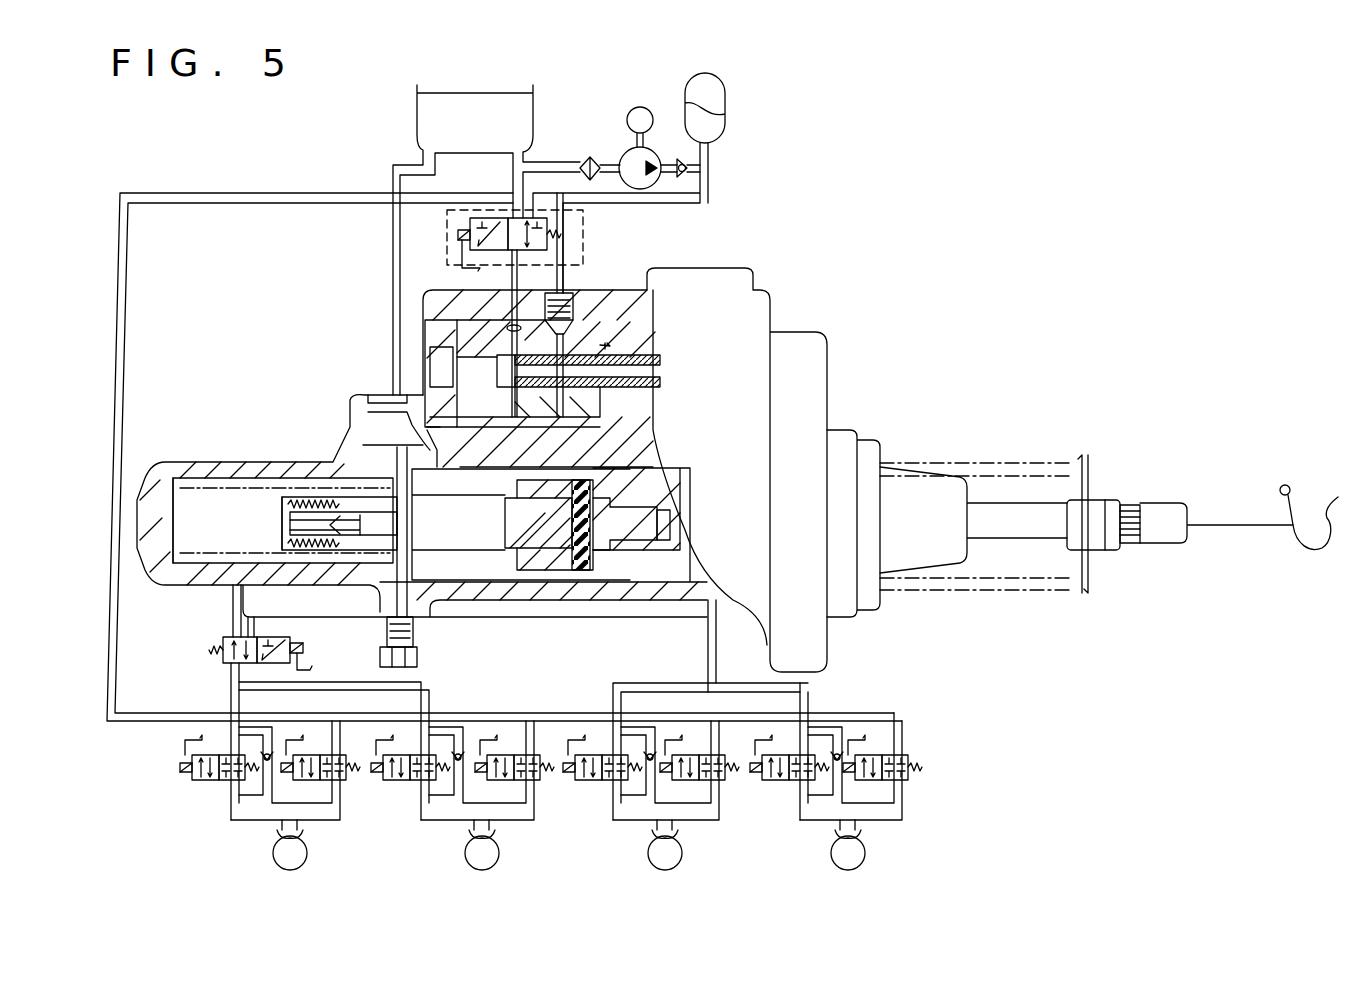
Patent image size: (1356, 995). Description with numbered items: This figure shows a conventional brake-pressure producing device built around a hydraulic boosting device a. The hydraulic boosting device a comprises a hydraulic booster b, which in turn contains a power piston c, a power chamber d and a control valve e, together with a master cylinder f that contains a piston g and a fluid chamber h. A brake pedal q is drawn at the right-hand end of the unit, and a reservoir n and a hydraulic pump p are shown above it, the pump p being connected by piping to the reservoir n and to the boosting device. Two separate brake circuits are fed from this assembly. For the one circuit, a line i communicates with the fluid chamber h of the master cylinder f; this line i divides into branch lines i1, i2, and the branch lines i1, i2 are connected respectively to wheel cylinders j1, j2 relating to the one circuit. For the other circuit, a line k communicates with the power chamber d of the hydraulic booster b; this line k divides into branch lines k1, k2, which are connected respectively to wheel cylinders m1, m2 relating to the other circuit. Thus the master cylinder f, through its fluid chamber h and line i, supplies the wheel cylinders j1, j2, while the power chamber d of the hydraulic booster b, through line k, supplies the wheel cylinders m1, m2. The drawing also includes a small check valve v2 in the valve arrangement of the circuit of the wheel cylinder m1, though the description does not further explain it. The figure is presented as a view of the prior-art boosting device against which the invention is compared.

The hydraulic boosting device a is at (796, 264).
The hydraulic booster b is at (608, 295).
The power piston c is at (617, 562).
The power chamber d is at (670, 428).
The control valve e is at (655, 300).
The master cylinder f is at (276, 466).
The piston g is at (332, 497).
The fluid chamber h is at (228, 510).
The line for the one circuit i is at (237, 608).
The branch line i1 is at (231, 700).
The branch line i2 is at (429, 705).
The wheel cylinder j1 is at (277, 834).
The wheel cylinder j2 is at (470, 834).
The line for the other circuit k is at (716, 645).
The branch line k1 is at (613, 703).
The branch line k2 is at (808, 705).
The wheel cylinder m1 is at (655, 834).
The wheel cylinder m2 is at (838, 836).
The reservoir n is at (527, 108).
The hydraulic pump p is at (631, 156).
The brake pedal q is at (1310, 510).
The check valve v2 is at (651, 765).